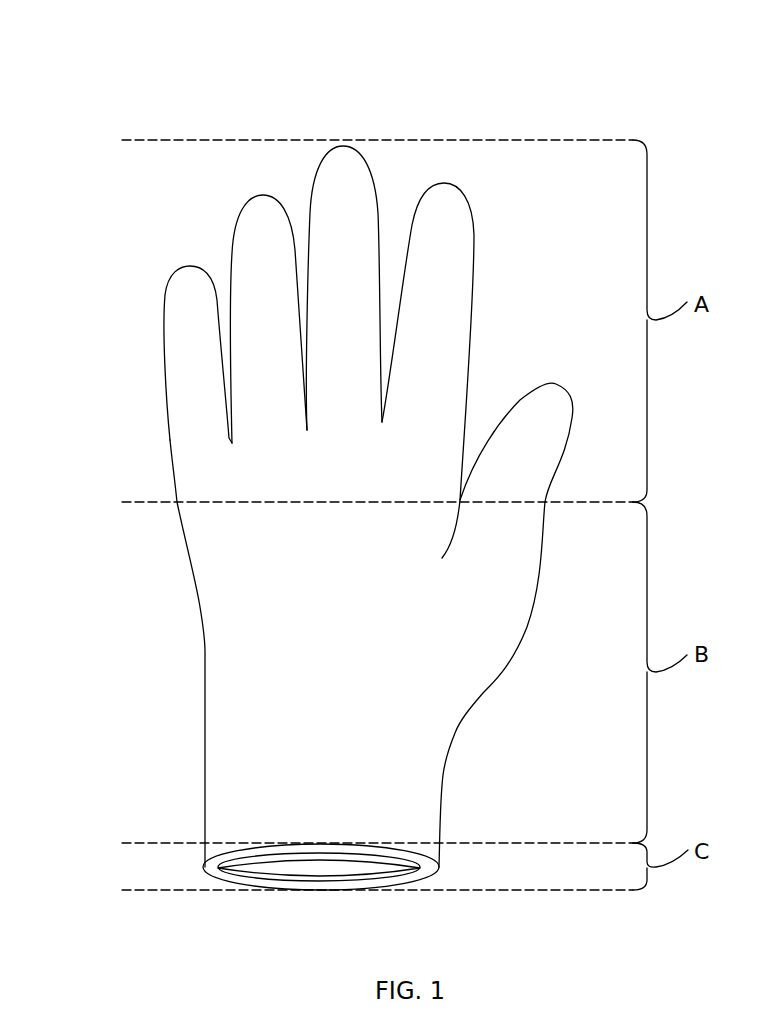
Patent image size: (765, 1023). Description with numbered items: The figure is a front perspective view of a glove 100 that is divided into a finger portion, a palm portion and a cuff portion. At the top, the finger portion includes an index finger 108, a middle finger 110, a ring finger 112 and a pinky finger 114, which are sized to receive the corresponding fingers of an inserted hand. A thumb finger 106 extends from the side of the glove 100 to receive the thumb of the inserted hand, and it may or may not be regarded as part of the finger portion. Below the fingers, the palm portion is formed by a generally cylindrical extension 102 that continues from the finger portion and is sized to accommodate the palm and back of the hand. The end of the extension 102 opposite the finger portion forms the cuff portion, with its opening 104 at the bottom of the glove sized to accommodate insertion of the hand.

The glove 100 is at (137, 71).
The generally cylindrical extension 102 is at (203, 650).
The cuff opening / beaded cuff 104 is at (273, 866).
The thumb finger 106 is at (555, 382).
The index finger 108 is at (447, 184).
The middle finger 110 is at (343, 147).
The ring finger 112 is at (263, 195).
The pinky finger 114 is at (185, 266).